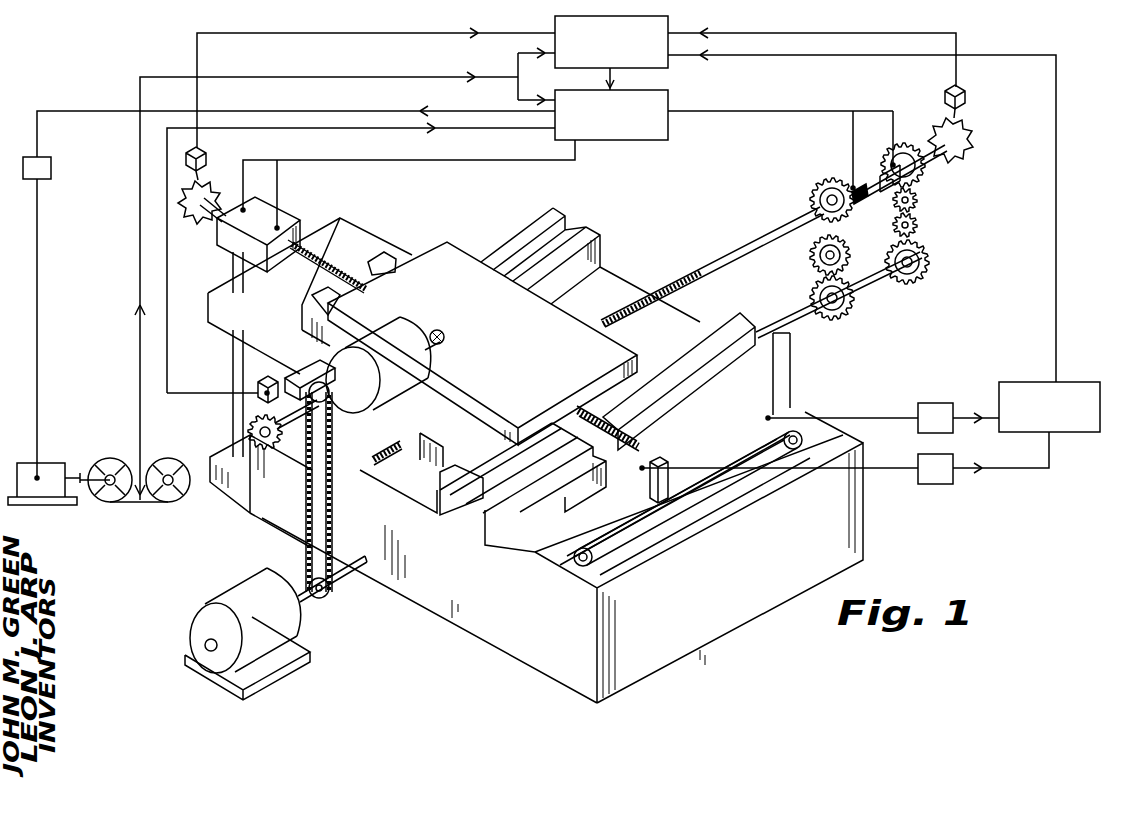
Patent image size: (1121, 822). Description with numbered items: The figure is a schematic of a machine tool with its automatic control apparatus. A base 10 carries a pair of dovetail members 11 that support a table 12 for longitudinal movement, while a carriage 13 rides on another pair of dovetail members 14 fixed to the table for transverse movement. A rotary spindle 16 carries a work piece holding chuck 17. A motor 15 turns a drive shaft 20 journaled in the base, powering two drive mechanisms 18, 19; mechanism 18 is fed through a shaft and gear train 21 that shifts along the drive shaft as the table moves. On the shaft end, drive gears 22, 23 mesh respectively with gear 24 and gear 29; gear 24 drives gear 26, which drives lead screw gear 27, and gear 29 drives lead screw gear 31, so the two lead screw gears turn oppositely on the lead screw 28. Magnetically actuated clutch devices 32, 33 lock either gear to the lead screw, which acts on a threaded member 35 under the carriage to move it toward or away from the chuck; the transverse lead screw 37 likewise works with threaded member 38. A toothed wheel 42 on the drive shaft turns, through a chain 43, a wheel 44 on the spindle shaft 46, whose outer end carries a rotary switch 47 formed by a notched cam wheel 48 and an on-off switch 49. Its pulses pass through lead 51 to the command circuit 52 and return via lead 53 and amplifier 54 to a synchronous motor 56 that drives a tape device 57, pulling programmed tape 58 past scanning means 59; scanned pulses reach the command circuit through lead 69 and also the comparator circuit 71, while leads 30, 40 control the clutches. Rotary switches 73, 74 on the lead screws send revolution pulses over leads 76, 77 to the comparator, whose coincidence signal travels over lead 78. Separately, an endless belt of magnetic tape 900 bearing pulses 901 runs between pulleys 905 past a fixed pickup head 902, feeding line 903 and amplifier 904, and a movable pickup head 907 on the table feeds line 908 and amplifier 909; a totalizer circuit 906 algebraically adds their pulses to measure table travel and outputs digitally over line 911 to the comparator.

The base 10 is at (478, 625).
The dovetail members 11 is at (470, 525).
The table 12 is at (457, 450).
The carriage 13 is at (548, 380).
The dovetail members 14 is at (556, 462).
The motor 15 is at (198, 622).
The rotary spindle 16 is at (380, 338).
The chuck 17 is at (438, 330).
The drive mechanism 18 is at (285, 212).
The drive mechanism 19 is at (800, 190).
The drive shaft 20 is at (358, 578).
The shaft and gear train 21 is at (240, 495).
The drive gear 22 is at (930, 278).
The drive gear 23 is at (838, 318).
The gear 24 is at (920, 228).
The gear 26 is at (920, 202).
The lead screw gear 27 is at (927, 178).
The lead screw 28 is at (745, 245).
The gear 29 is at (810, 262).
The lead 30 is at (853, 125).
The lead screw gear 31 is at (822, 182).
The clutch device 32 is at (852, 188).
The clutch device 33 is at (888, 170).
The threaded member 35 is at (378, 468).
The transverse lead screw 37 is at (332, 262).
The threaded member 38 is at (590, 405).
The lead 40 is at (893, 111).
The toothed wheel 42 is at (321, 600).
The chain 43 is at (306, 550).
The wheel 44 is at (322, 384).
The spindle shaft 46 is at (290, 376).
The rotary switch 47 is at (245, 418).
The cam wheel 48 is at (275, 452).
The on-off switch 49 is at (255, 378).
The lead 51 is at (175, 393).
The command circuit 52 is at (635, 142).
The lead 53 is at (37, 396).
The amplifier 54 is at (51, 168).
The synchronous motor 56 is at (28, 465).
The tape device 57 is at (116, 466).
The programmed tape 58 is at (120, 502).
The scanning means 59 is at (145, 500).
The lead 69 is at (140, 348).
The comparator circuit 71 is at (670, 34).
The rotary switch 73 is at (215, 178).
The rotary switch 74 is at (972, 128).
The lead 76 is at (245, 33).
The lead 77 is at (888, 33).
The lead 78 is at (613, 74).
The endless belt of magnetic tape 900 is at (678, 492).
The pulses 901 is at (700, 470).
The fixed pickup head 902 is at (738, 398).
The line 903 is at (866, 417).
The amplifier 904 is at (930, 403).
The pulleys 905 is at (580, 567).
The totalizer circuit 906 is at (999, 390).
The movable pickup head 907 is at (672, 500).
The line 908 is at (838, 470).
The amplifier 909 is at (933, 484).
The line 911 is at (1056, 338).